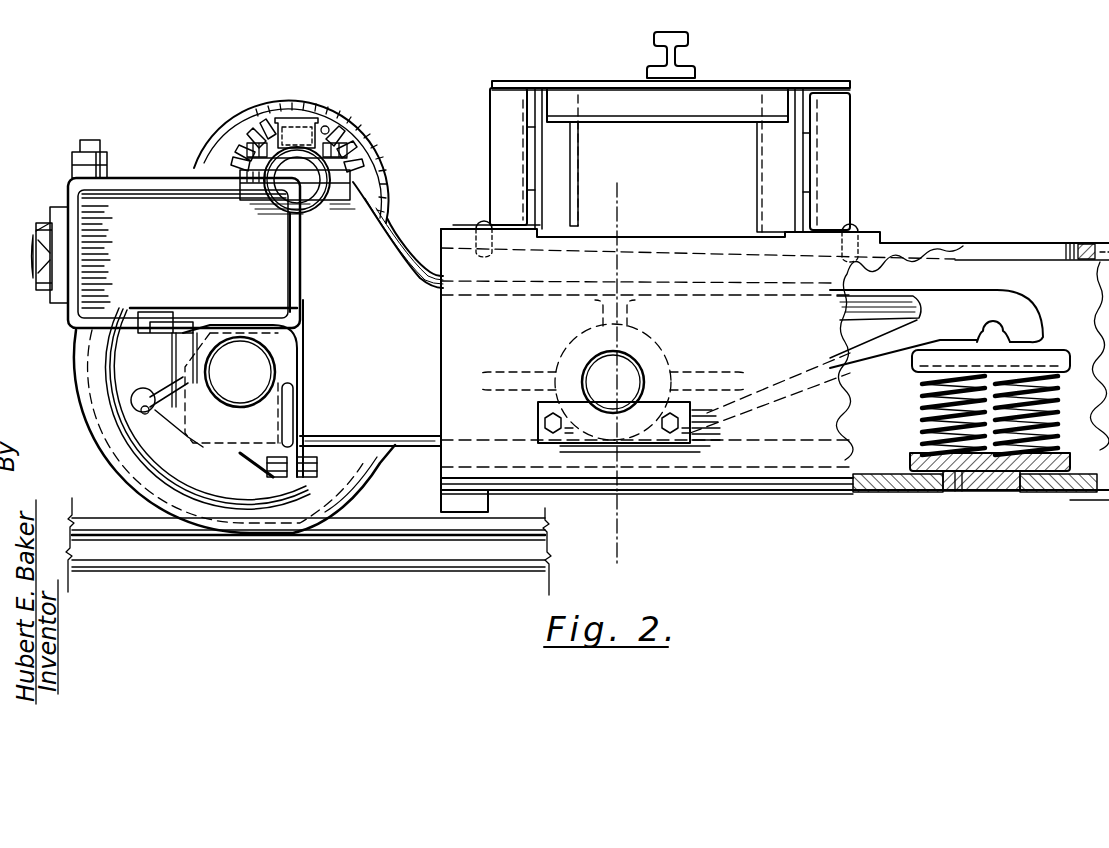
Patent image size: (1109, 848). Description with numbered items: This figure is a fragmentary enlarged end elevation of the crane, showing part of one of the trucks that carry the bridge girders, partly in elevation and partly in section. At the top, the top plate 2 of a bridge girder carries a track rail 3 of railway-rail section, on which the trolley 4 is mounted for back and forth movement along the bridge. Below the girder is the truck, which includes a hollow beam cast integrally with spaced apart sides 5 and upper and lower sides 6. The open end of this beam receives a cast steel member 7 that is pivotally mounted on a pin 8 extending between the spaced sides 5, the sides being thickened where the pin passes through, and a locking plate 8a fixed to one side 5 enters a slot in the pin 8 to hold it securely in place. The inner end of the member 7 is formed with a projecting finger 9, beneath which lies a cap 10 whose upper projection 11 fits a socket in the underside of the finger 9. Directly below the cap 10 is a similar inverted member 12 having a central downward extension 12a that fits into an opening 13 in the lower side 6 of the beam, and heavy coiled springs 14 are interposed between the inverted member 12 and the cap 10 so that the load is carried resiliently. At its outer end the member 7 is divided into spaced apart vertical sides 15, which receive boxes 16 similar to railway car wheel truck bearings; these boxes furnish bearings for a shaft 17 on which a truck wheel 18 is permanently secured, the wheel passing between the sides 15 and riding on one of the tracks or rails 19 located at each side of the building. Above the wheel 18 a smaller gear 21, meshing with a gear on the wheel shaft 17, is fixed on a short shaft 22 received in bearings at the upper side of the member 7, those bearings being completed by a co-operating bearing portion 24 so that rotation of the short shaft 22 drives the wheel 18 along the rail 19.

The top plate 2 is at (718, 82).
The track rail 3 is at (676, 50).
The trolley 4 is at (603, 371).
The spaced apart sides 5 is at (797, 437).
The upper and lower sides 6 is at (878, 487).
The member 7 is at (419, 428).
The pin 8 is at (627, 369).
The locking plate 8a is at (646, 435).
The projecting finger 9 is at (1003, 306).
The cap 10 is at (1030, 353).
The projection 11 is at (995, 333).
The inverted member 12 is at (1047, 470).
The central downward extension 12a is at (987, 477).
The opening 13 is at (957, 477).
The coiled springs 14 is at (930, 400).
The vertical sides 15 is at (120, 288).
The boxes 16 is at (192, 407).
The shaft 17 is at (258, 357).
The truck wheel 18 is at (274, 504).
The tracks or rails 19 is at (370, 556).
The smaller gear 21 is at (345, 140).
The short shaft 22 is at (305, 190).
The co-operating bearing portion 24 is at (380, 172).